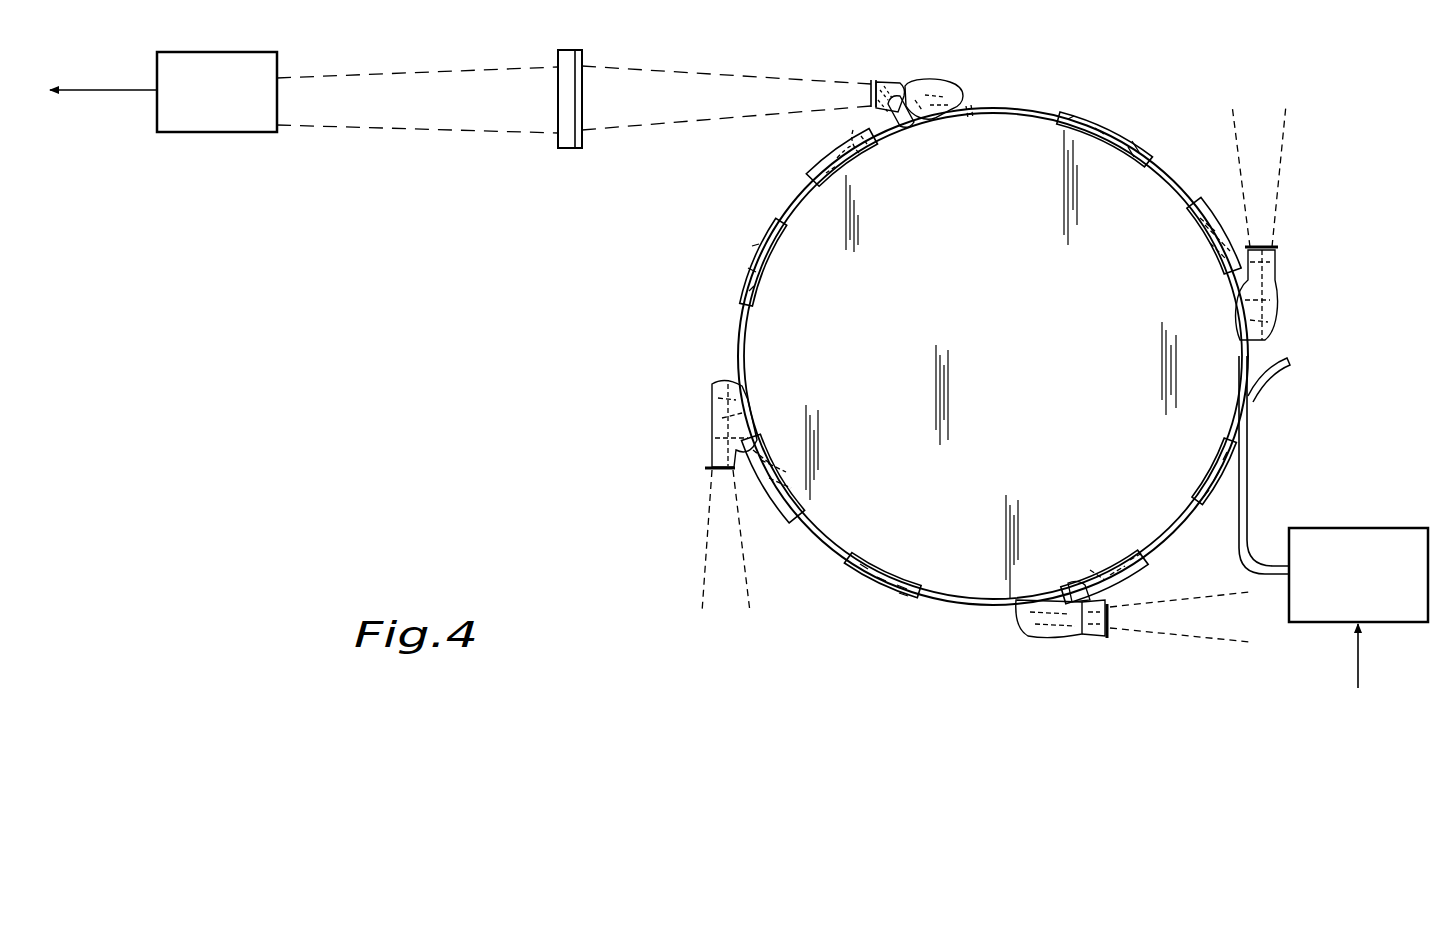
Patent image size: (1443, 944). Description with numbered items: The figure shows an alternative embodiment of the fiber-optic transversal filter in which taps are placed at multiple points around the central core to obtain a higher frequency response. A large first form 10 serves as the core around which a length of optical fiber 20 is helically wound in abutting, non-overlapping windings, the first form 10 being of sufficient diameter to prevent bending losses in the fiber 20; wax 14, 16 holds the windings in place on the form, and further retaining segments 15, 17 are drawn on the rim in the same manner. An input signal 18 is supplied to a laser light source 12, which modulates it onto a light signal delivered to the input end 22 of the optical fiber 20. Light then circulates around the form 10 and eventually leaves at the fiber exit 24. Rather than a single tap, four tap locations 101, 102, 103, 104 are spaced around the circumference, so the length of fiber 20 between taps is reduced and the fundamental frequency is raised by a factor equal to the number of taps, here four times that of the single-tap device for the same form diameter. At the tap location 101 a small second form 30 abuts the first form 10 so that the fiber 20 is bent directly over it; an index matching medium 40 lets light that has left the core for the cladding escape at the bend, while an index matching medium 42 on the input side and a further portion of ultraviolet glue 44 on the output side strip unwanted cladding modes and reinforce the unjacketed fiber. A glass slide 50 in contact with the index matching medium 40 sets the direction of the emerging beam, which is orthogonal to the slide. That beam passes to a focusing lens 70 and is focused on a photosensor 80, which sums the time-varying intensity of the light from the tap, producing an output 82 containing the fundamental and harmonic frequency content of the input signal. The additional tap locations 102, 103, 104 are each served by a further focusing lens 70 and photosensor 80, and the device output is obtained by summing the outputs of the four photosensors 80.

The first form 10 is at (968, 578).
The laser light source 12 is at (1368, 528).
The wax 14 is at (1108, 135).
The light-transmitting segment 15 is at (758, 242).
The wax 16 is at (862, 582).
The light-transmitting segment 17 is at (1217, 490).
The input signal 18 is at (1365, 665).
The optical fiber 20 is at (1254, 455).
The input end 22 is at (1266, 560).
The fiber exit 24 is at (1275, 365).
The second form 30 is at (903, 124).
The index matching medium 40 is at (896, 82).
The index matching medium 42 is at (948, 84).
The ultraviolet glue 44 is at (851, 127).
The glass slide 50 is at (873, 80).
The focusing lens 70 is at (570, 52).
The photosensor 80 is at (213, 132).
The output 82 is at (113, 88).
The tap location 101 is at (957, 95).
The tap location 102 is at (700, 437).
The tap location 103 is at (1080, 640).
The tap location 104 is at (1285, 262).